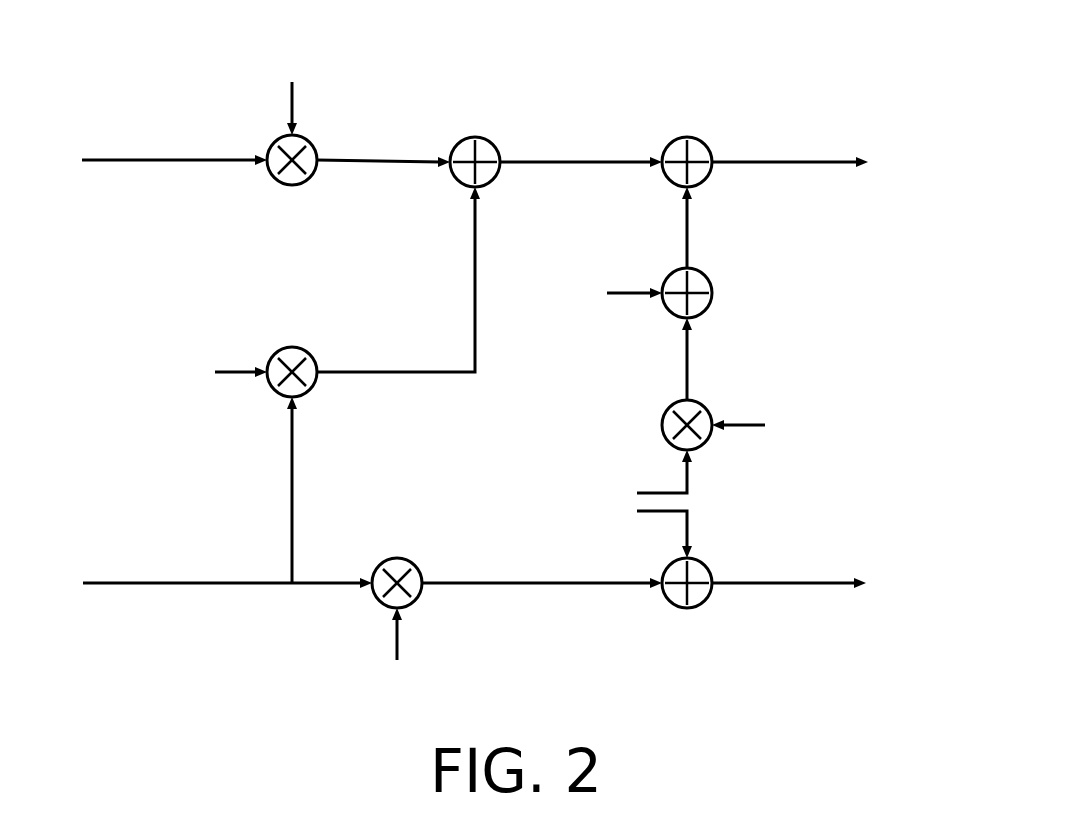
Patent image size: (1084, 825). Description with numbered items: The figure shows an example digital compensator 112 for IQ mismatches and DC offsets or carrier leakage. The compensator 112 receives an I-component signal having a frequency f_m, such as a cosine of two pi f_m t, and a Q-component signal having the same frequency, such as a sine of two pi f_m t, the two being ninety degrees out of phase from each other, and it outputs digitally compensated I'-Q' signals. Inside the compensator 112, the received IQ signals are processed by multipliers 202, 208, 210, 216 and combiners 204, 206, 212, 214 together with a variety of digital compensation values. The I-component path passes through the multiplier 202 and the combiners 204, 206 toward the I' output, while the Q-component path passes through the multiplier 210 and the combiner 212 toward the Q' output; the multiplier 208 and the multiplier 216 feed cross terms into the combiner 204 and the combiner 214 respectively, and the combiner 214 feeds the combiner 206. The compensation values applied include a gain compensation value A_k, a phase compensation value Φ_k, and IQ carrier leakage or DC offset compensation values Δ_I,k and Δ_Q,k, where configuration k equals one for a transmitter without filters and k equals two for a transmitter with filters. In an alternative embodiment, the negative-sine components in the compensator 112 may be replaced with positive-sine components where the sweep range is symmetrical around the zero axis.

The compensator 112 is at (568, 82).
The multiplier 202 is at (292, 176).
The combiner 204 is at (475, 149).
The combiner 206 is at (687, 149).
The multiplier 208 is at (292, 359).
The multiplier 210 is at (397, 569).
The combiner 212 is at (687, 602).
The combiner 214 is at (708, 293).
The multiplier 216 is at (665, 425).